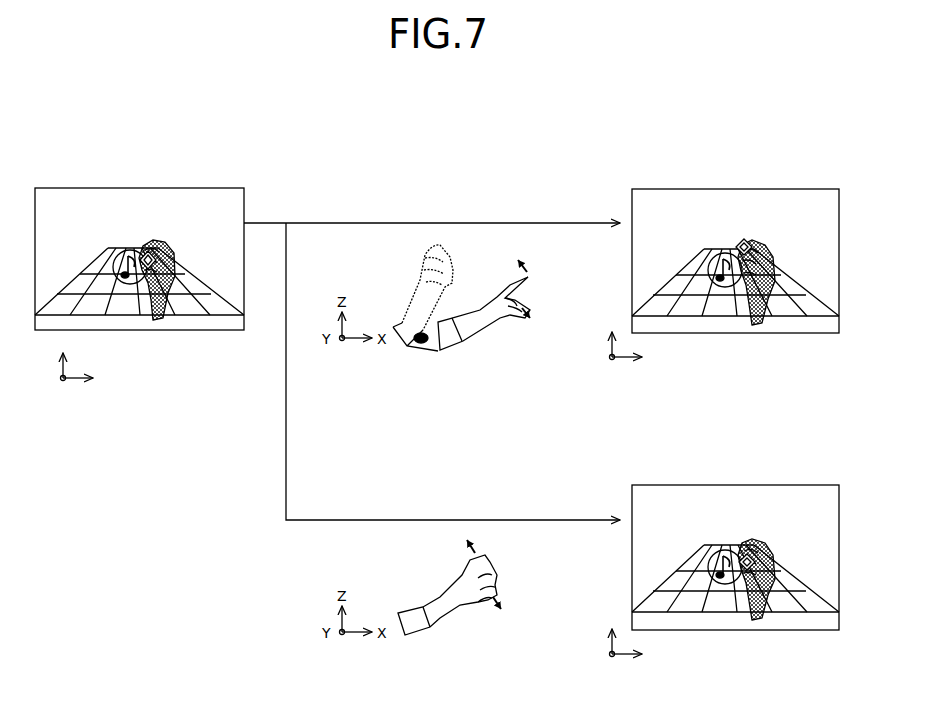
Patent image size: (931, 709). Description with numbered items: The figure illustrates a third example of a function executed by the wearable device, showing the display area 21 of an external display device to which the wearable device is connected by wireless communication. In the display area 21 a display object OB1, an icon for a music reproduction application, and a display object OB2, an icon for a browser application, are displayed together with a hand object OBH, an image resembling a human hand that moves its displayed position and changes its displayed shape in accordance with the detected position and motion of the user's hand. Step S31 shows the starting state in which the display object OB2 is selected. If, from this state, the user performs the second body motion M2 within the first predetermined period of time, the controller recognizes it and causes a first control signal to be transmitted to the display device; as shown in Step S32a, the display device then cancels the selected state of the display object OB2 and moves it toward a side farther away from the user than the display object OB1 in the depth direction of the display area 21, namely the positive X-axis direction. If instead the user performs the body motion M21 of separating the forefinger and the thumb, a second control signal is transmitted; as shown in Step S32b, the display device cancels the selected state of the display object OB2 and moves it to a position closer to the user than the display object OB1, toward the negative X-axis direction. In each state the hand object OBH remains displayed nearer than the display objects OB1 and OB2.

The display area 21 is at (437, 394).
The display object OB1 is at (393, 372).
The display object OB2 is at (429, 364).
The hand object OBH is at (454, 459).
The second body motion M2 is at (412, 259).
The body motion M21 is at (432, 572).
The step S31 is at (139, 251).
The step S32a is at (715, 242).
The step S32b is at (715, 538).